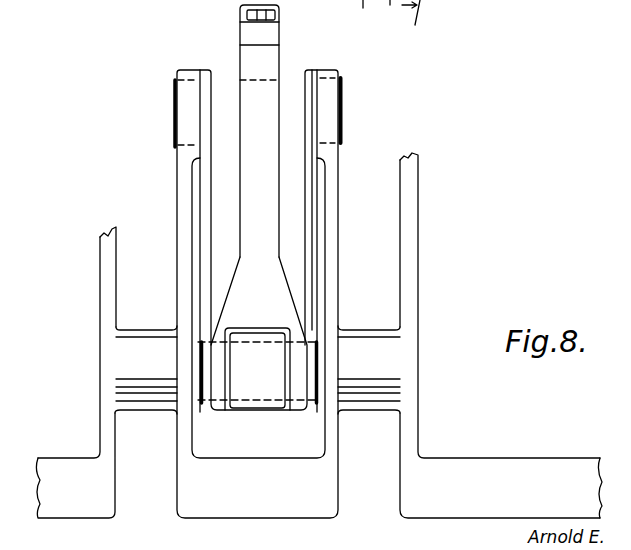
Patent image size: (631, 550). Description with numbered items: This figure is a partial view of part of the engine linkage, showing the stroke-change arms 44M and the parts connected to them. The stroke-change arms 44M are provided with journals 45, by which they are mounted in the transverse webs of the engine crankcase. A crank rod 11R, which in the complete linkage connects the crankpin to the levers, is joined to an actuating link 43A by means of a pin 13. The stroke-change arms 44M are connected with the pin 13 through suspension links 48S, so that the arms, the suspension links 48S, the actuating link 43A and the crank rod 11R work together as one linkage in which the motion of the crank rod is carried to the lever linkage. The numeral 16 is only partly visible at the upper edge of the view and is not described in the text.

The crank rod 11R is at (281, 58).
The pin 13 is at (318, 395).
The section line indicator 16 is at (423, 12).
The actuating link 43A is at (250, 413).
The stroke-change arm 44M is at (100, 258).
The journal 45 is at (352, 325).
The suspension link 48S is at (205, 208).